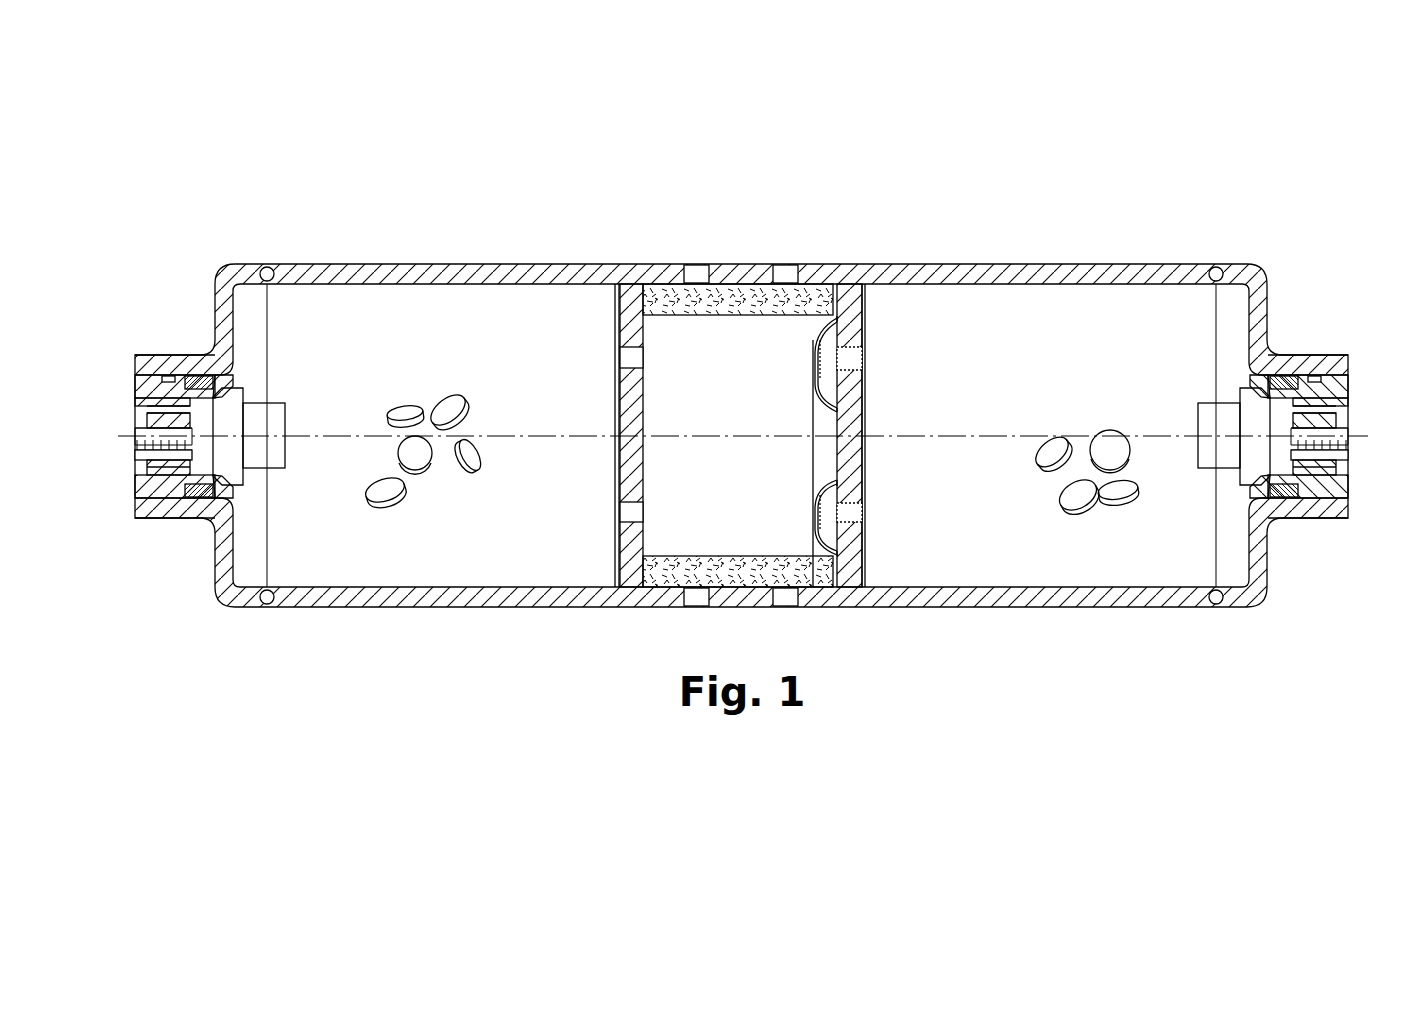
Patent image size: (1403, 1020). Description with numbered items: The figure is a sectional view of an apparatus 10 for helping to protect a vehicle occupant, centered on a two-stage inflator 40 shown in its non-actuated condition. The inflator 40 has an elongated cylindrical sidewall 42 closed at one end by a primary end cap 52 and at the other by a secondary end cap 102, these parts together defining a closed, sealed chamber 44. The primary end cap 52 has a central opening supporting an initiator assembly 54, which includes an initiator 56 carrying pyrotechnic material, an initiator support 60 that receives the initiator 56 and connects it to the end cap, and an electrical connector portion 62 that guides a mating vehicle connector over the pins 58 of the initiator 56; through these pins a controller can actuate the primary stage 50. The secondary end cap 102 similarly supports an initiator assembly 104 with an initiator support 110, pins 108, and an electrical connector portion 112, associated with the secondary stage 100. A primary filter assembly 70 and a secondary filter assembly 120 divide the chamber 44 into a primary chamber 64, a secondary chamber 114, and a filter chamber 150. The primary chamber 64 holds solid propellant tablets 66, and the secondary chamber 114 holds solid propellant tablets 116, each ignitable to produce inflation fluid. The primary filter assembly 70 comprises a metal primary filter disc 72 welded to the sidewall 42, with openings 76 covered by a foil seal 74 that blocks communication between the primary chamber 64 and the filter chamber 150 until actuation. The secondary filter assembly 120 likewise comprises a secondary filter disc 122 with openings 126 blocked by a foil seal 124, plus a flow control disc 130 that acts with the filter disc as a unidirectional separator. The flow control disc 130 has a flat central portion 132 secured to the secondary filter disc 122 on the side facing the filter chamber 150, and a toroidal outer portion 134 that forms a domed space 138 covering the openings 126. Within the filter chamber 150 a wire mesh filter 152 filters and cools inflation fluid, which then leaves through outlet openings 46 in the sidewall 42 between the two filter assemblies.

The drug delivery device 10 is at (345, 195).
The inflator 40 is at (741, 364).
The cylindrical sidewall 42 is at (539, 279).
The chamber 44 is at (305, 392).
The outlet openings 46 is at (697, 275).
The primary stage 50 is at (410, 546).
The primary end cap 52 is at (235, 273).
The initiator assembly 54 is at (168, 470).
The initiator 56 is at (265, 452).
The pins 58 is at (133, 446).
The initiator support 60 is at (200, 372).
The electrical connector portion 62 is at (143, 413).
The primary chamber 64 is at (505, 404).
The solid propellant tablets 66 is at (420, 420).
The primary filter assembly 70 is at (688, 401).
The primary filter disc 72 is at (633, 423).
The foil seal 74 is at (624, 424).
The openings 76 is at (640, 357).
The secondary stage 100 is at (990, 548).
The secondary end cap 102 is at (1255, 290).
The initiator assembly 104 is at (1313, 468).
The pins 108 is at (1330, 442).
The initiator support 110 is at (1303, 388).
The electrical connector portion 112 is at (1352, 425).
The secondary chamber 114 is at (1072, 387).
The solid propellant tablets 116 is at (1085, 490).
The secondary filter assembly 120 is at (850, 434).
The secondary filter disc 122 is at (855, 456).
The foil seal 124 is at (866, 405).
The openings 126 is at (852, 358).
The flow control disc 130 is at (826, 400).
The central portion 132 is at (830, 420).
The outer portion 134 is at (816, 355).
The domed space 138 is at (843, 330).
The filter chamber 150 is at (694, 507).
The filter 152 is at (735, 300).